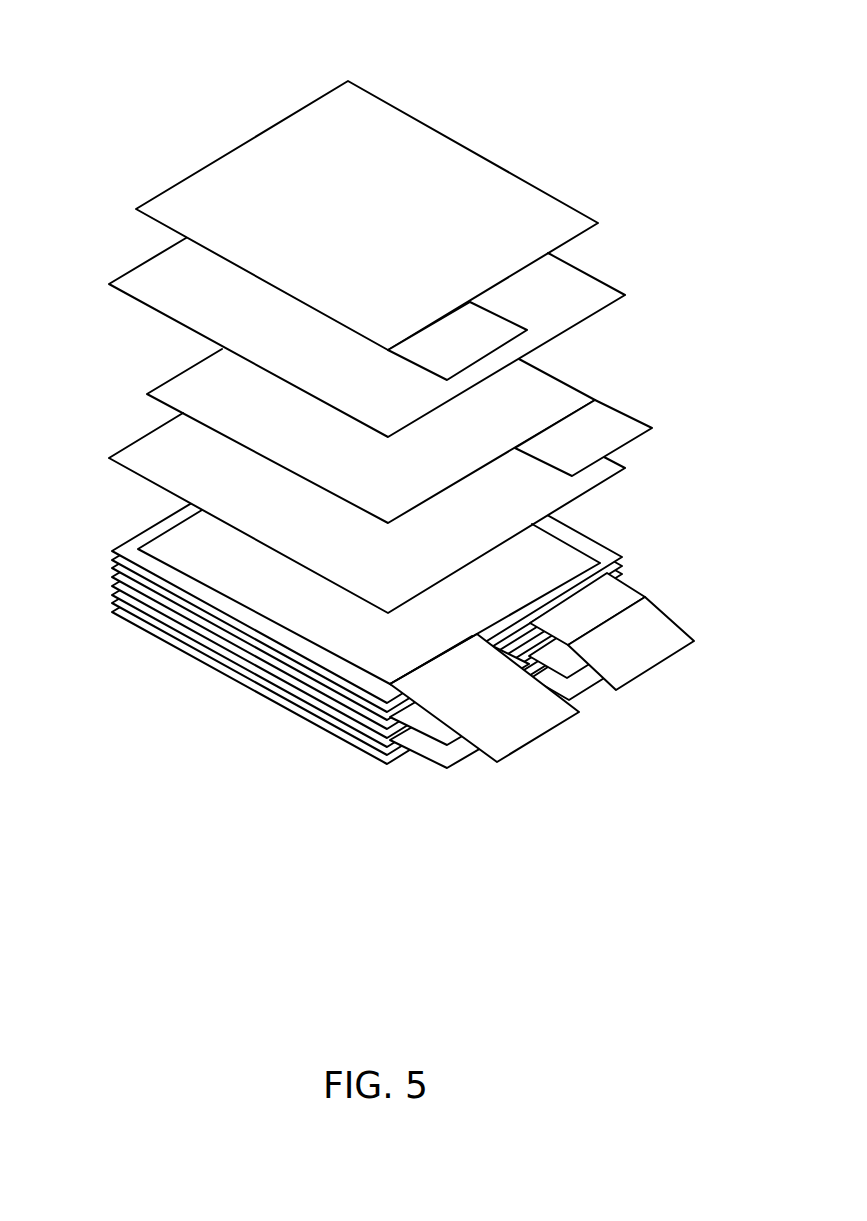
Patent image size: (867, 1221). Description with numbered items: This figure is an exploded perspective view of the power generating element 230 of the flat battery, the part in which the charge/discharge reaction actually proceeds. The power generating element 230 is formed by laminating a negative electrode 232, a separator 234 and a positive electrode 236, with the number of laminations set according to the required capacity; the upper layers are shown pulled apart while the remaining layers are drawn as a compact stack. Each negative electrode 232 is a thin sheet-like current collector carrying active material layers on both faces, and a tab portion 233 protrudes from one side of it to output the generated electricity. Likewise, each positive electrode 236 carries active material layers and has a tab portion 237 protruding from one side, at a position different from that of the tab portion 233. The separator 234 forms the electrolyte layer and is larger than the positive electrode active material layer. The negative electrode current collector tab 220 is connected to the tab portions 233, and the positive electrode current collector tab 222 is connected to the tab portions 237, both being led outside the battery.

The power generating element 230 is at (176, 37).
The negative electrode 232 is at (233, 148).
The tab portion 233 is at (513, 338).
The separator 234 is at (150, 259).
The positive electrode 236 is at (188, 368).
The tab portion 237 is at (635, 441).
The current collector tab 220 is at (537, 739).
The current collector tab 222 is at (650, 670).